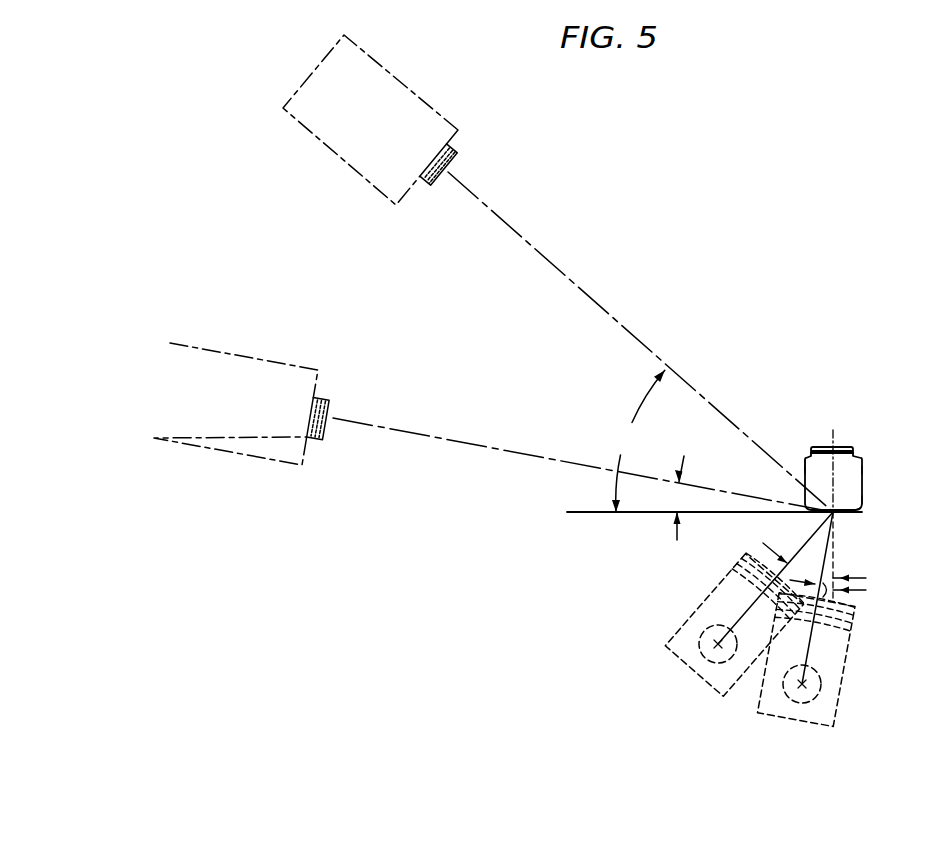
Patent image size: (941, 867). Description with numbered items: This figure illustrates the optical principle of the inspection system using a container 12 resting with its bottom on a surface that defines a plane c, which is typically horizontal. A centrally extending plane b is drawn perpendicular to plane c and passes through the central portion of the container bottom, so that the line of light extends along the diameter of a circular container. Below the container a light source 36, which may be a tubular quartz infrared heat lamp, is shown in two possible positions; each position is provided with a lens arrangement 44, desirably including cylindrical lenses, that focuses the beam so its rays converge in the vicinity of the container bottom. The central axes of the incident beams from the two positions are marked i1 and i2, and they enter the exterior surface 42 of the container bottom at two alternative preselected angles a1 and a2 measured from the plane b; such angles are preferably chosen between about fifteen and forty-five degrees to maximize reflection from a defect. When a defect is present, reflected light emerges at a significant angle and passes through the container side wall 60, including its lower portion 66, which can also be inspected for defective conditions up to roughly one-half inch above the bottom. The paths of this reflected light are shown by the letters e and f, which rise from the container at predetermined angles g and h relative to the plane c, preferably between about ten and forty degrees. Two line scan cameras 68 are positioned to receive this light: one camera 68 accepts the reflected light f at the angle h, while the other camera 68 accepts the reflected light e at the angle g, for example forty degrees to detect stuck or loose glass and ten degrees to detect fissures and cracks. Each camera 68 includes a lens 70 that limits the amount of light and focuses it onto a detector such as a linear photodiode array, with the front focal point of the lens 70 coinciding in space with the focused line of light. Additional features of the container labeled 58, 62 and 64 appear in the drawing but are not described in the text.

The container 12 is at (858, 455).
The light source 36 is at (667, 645).
The exterior surface of the container bottom 42 is at (838, 514).
The lens arrangement 44 is at (742, 559).
The container finish 58 is at (857, 500).
The container side wall 60 is at (804, 461).
The container shoulder 62 is at (862, 471).
The container wall 64 is at (803, 470).
The lower portion of the side wall 66 is at (859, 507).
The line scan camera 68 is at (417, 96).
The lens 70 is at (453, 172).
The centrally extending plane b is at (834, 442).
The plane c is at (589, 513).
The reflected light path e is at (511, 450).
The reflected light path f is at (557, 276).
The predetermined angle g is at (677, 498).
The predetermined angle h is at (638, 441).
The central axis of the incident beam i1 is at (812, 533).
The central axis of the incident beam i2 is at (825, 560).
The preselected angle a1 is at (811, 598).
The preselected angle a2 is at (836, 592).